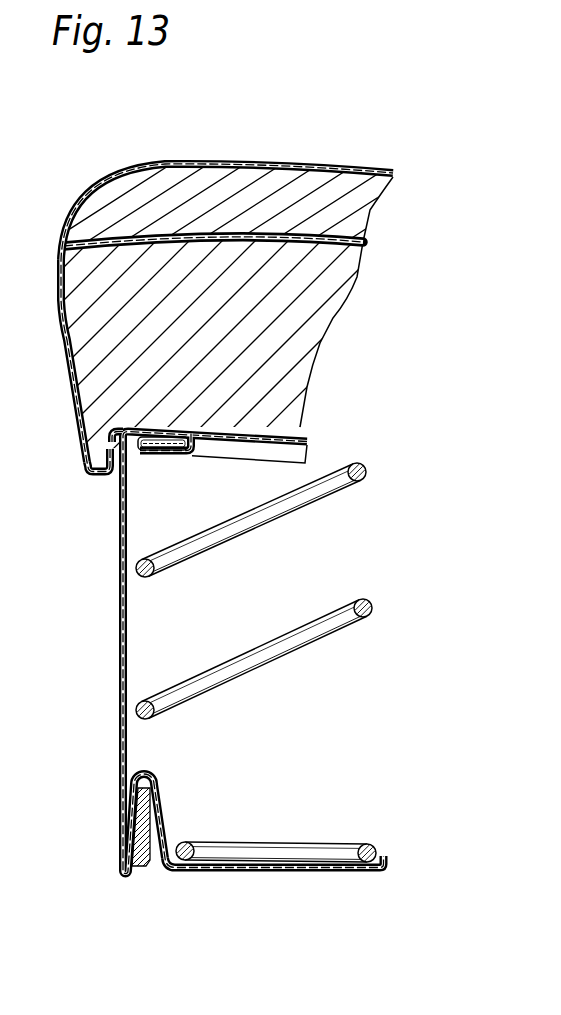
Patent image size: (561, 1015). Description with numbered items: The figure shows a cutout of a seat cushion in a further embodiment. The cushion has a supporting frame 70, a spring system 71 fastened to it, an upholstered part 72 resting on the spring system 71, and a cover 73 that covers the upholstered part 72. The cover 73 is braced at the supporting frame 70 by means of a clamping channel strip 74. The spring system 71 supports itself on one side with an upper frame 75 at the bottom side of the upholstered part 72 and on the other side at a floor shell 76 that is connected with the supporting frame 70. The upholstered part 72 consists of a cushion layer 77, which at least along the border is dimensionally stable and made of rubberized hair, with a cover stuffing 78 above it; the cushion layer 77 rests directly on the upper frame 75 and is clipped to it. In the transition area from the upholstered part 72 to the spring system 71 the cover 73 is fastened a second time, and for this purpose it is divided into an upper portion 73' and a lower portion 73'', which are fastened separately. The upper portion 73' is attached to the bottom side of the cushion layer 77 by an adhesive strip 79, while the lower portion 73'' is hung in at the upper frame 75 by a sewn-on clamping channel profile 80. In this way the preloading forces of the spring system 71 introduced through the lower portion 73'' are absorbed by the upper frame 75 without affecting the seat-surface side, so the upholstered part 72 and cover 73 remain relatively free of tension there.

The supporting frame 70 is at (131, 878).
The spring system 71 is at (274, 845).
The upholstered part 72 is at (270, 310).
The cover 73 is at (199, 313).
The upper portion of the cover 73' is at (46, 361).
The lower portion of the cover 73'' is at (78, 653).
The clamping channel strip 74 is at (160, 866).
The upper frame 75 is at (158, 453).
The floor shell 76 is at (313, 873).
The cushion layer 77 is at (298, 350).
The cover stuffing 78 is at (362, 204).
The adhesive strip 79 is at (100, 477).
The clamping channel profile 80 is at (165, 451).